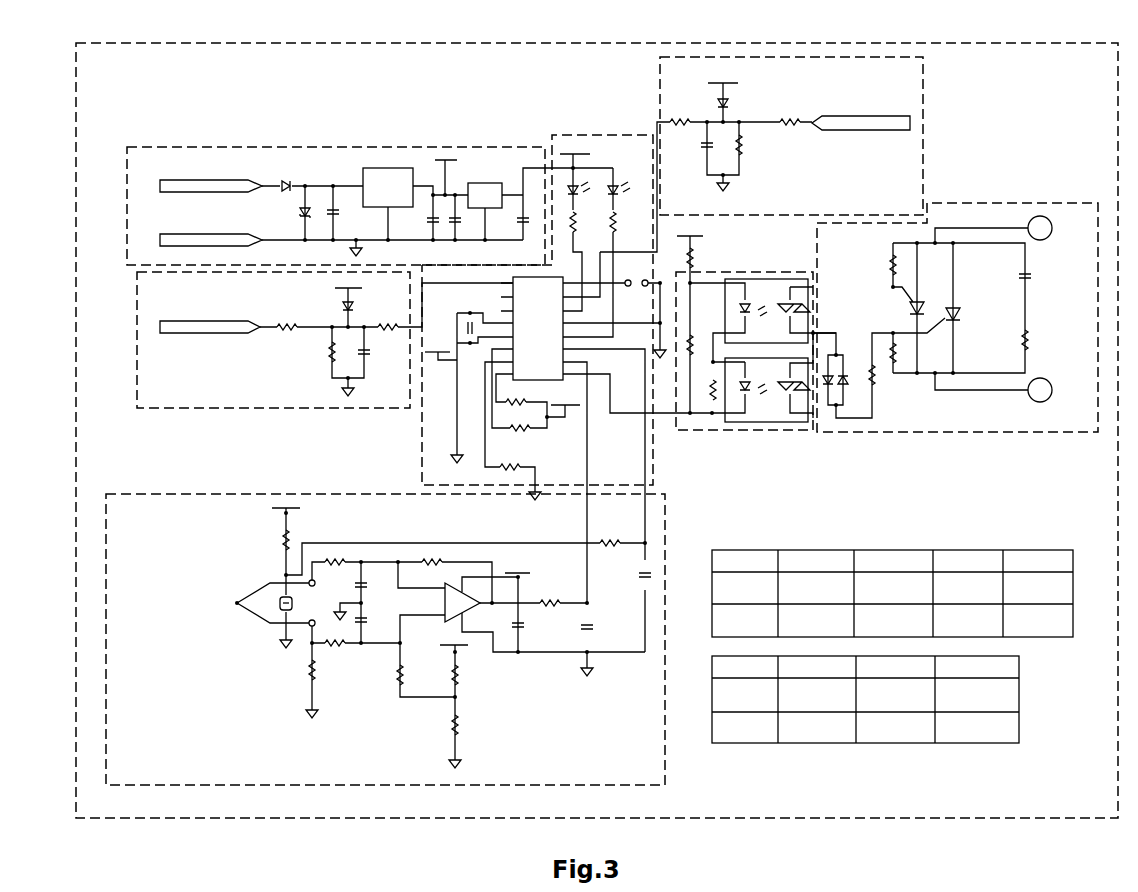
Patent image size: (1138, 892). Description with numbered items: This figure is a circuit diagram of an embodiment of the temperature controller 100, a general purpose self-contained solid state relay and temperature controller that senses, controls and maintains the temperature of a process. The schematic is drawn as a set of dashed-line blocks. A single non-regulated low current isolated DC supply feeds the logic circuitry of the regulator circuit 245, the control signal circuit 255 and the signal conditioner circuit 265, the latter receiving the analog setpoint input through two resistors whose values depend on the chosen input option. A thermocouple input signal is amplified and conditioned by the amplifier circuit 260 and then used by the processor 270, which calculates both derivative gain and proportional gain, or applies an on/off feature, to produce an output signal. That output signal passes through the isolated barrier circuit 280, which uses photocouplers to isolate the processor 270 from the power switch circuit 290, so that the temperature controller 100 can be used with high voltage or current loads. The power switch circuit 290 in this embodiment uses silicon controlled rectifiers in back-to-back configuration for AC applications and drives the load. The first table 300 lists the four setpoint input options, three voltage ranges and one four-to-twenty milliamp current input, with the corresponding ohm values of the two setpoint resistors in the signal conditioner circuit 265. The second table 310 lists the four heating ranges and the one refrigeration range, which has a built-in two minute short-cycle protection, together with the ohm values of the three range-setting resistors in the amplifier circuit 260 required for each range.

The temperature controller 100 is at (588, 43).
The regulator circuit 245 is at (362, 145).
The control signal circuit 255 is at (925, 118).
The amplifier circuit 260 is at (355, 494).
The signal conditioner circuit 265 is at (285, 408).
The processor 270 is at (597, 135).
The isolated barrier circuit 280 is at (722, 432).
The power switch circuit 290 is at (1015, 203).
The table 300 is at (985, 550).
The table 310 is at (1002, 657).